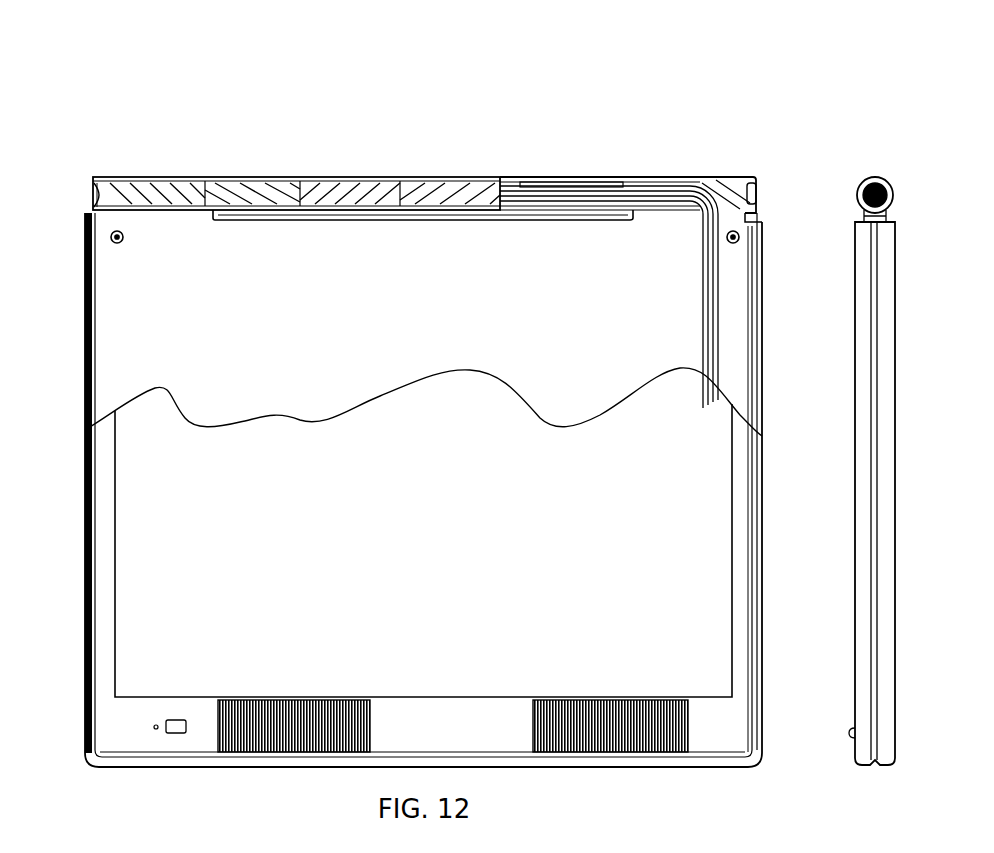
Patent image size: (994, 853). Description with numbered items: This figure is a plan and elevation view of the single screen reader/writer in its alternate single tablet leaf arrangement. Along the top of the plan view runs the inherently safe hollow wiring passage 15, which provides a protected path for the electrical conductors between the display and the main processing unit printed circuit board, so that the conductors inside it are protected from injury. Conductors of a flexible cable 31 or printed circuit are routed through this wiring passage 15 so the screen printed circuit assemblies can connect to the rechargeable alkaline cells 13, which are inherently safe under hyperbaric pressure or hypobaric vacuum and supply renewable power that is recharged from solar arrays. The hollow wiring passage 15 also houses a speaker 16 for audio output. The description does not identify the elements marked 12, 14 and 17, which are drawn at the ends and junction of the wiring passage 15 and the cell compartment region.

The pivot end cap 12 is at (90, 192).
The rechargeable alkaline cells 13 is at (120, 182).
The connecting bracket 14 is at (501, 178).
The hollow wiring passage 15 is at (717, 176).
The speaker 16 is at (747, 178).
The fixing member 17 is at (757, 196).
The flexible cable 31 is at (678, 178).